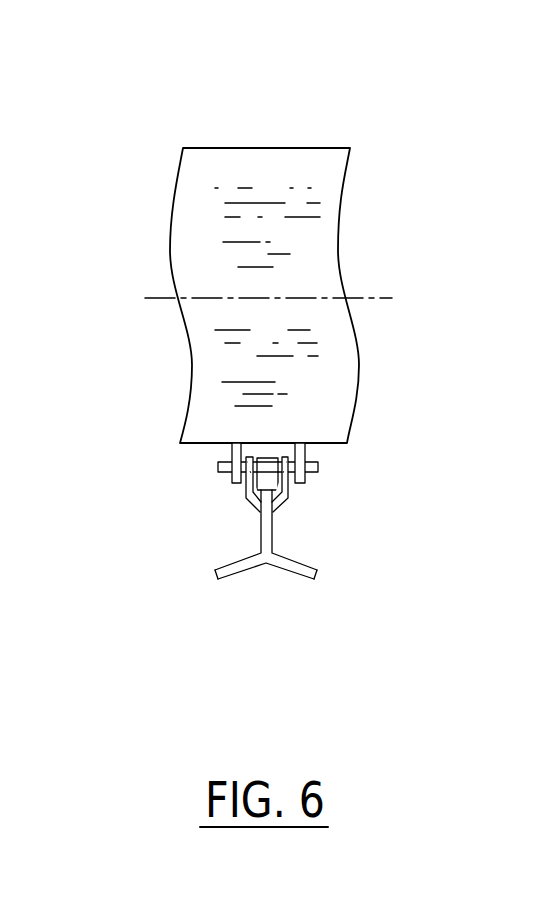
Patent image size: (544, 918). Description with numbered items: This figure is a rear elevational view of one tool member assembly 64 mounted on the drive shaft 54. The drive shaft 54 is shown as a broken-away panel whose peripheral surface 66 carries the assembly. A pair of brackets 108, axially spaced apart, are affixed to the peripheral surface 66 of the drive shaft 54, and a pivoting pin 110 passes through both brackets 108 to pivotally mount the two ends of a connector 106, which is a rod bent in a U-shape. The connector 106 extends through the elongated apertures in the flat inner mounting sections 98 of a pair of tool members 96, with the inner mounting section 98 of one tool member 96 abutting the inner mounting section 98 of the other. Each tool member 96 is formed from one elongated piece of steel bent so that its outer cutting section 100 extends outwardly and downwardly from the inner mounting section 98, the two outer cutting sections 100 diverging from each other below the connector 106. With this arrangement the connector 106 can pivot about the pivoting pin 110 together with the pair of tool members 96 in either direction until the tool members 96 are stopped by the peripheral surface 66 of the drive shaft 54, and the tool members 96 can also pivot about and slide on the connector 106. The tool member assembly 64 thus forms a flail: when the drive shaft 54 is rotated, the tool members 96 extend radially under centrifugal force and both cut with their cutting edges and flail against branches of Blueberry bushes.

The drive shaft 54 is at (288, 148).
The peripheral surface 66 is at (330, 402).
The tool member assembly 64 is at (297, 541).
The brackets 108 is at (231, 457).
The pivoting pin 110 is at (318, 469).
The connector 106 is at (246, 501).
The inner mounting section 98 is at (259, 535).
The tool members 96 is at (226, 568).
The outer cutting section 100 is at (230, 582).